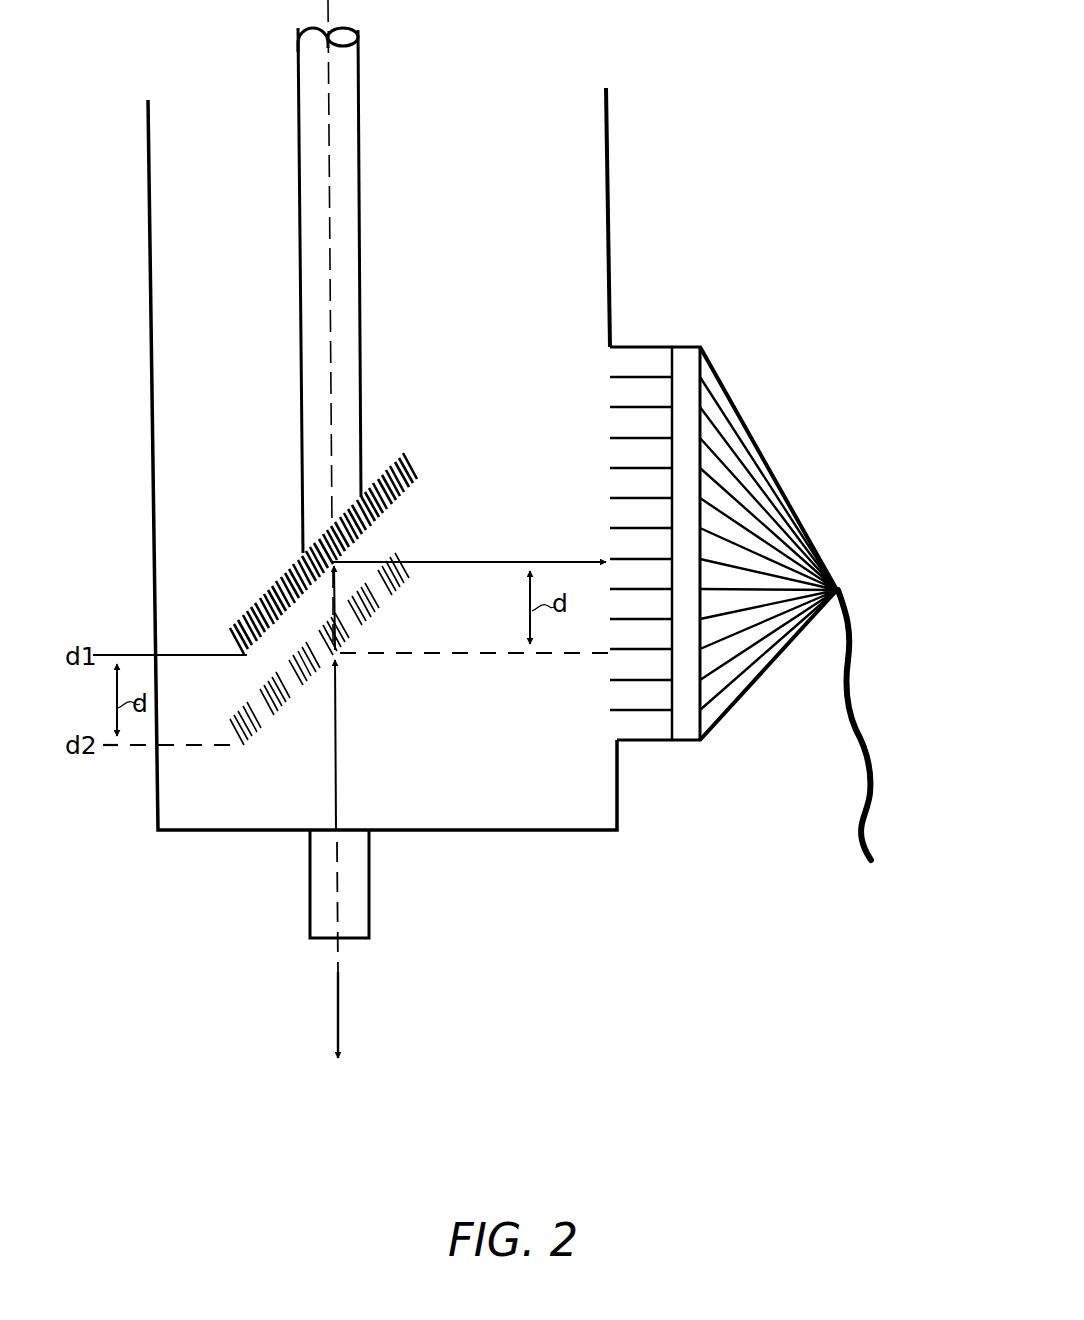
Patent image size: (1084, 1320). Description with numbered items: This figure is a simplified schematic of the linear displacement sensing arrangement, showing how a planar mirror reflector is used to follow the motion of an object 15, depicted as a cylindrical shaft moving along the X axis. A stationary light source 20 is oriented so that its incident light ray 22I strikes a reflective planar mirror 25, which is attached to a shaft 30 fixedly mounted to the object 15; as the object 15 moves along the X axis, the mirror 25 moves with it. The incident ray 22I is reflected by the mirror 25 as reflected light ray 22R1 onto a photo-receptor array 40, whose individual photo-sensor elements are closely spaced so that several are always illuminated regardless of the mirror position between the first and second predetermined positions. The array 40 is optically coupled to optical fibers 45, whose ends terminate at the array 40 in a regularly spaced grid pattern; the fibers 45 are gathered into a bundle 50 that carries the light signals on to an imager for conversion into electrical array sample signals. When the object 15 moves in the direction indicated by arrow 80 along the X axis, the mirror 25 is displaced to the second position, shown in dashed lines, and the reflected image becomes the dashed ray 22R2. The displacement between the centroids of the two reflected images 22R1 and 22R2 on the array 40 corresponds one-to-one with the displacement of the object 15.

The object 15 is at (165, 463).
The stationary light source 20 is at (355, 903).
The incident light ray 22I is at (338, 790).
The reflected light ray 22R1 is at (460, 560).
The reflected light ray in second position 22R2 is at (475, 654).
The reflective planar mirror 25 is at (231, 624).
The shaft 30 is at (345, 298).
The photo-receptor array 40 is at (652, 345).
The optical fibers 45 is at (768, 450).
The bundle 50 is at (848, 656).
The arrow 80 is at (337, 1019).